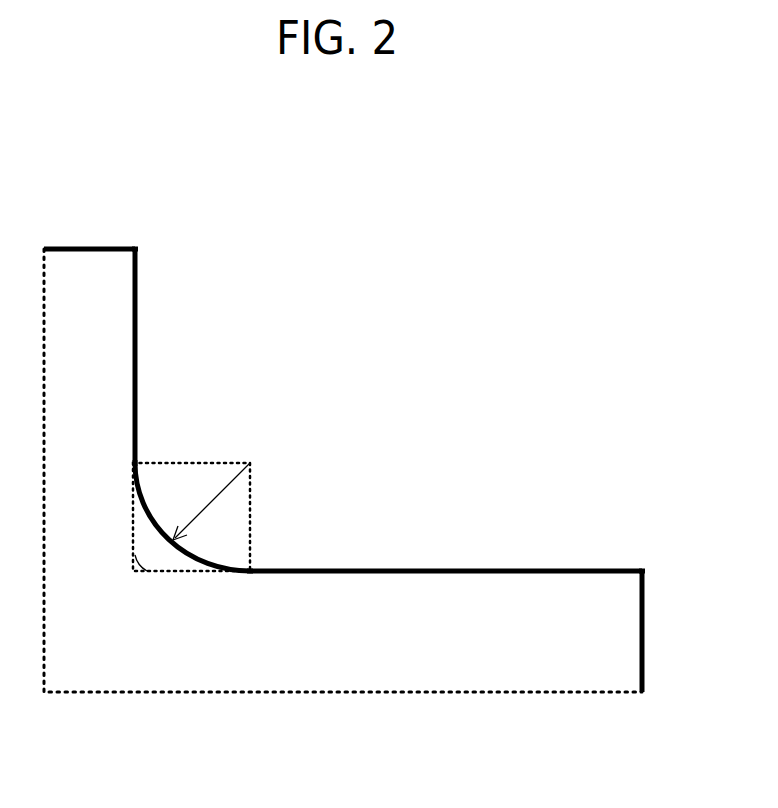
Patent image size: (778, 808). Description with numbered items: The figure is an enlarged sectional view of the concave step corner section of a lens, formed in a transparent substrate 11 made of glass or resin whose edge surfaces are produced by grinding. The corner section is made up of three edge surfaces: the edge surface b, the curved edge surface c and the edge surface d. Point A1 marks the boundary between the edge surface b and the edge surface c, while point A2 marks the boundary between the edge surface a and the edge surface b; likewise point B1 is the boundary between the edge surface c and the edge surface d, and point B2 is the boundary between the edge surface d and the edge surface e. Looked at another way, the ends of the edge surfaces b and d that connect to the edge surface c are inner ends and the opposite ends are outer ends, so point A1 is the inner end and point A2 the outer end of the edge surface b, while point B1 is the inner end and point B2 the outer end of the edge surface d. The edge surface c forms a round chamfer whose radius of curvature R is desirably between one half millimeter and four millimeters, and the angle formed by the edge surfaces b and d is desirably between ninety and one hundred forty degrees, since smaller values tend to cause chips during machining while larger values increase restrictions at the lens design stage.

The transparent substrate 11 is at (373, 443).
The edge surface a is at (89, 230).
The edge surface b is at (138, 299).
The edge surface c is at (160, 488).
The edge surface d is at (470, 568).
The edge surface e is at (645, 636).
The point A1 is at (135, 462).
The point A2 is at (137, 248).
The point B1 is at (252, 570).
The point B2 is at (640, 568).
The radius of curvature R is at (191, 517).